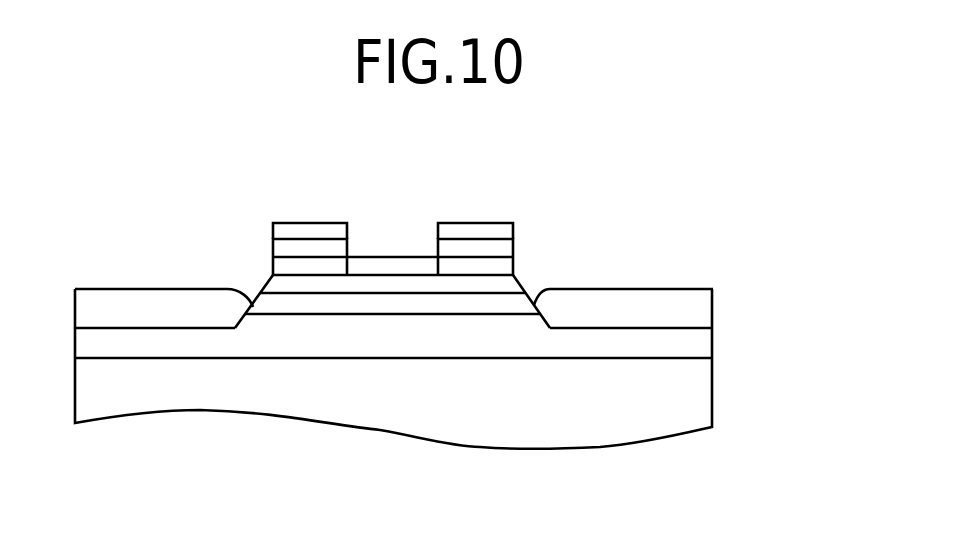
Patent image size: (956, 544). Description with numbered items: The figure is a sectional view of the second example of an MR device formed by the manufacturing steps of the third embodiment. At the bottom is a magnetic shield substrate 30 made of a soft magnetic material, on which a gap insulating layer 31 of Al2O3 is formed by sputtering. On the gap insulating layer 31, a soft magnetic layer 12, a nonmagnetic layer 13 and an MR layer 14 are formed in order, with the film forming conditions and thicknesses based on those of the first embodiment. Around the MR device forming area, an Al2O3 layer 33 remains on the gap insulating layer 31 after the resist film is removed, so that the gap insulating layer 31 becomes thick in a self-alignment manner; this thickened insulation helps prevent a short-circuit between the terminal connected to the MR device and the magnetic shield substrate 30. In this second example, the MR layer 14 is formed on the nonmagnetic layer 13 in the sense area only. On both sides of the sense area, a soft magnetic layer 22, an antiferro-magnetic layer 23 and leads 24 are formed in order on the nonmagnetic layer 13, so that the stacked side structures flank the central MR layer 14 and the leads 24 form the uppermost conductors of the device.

The magnetic shield substrate 30 is at (683, 410).
The gap insulating layer 31 is at (463, 342).
The Al2O3 layer 33 is at (632, 307).
The soft magnetic layer 12 is at (357, 303).
The nonmagnetic layer 13 is at (297, 283).
The MR layer 14 is at (372, 270).
The soft magnetic layer 22 is at (507, 269).
The antiferro-magnetic layer 23 is at (507, 247).
The leads 24 is at (470, 223).